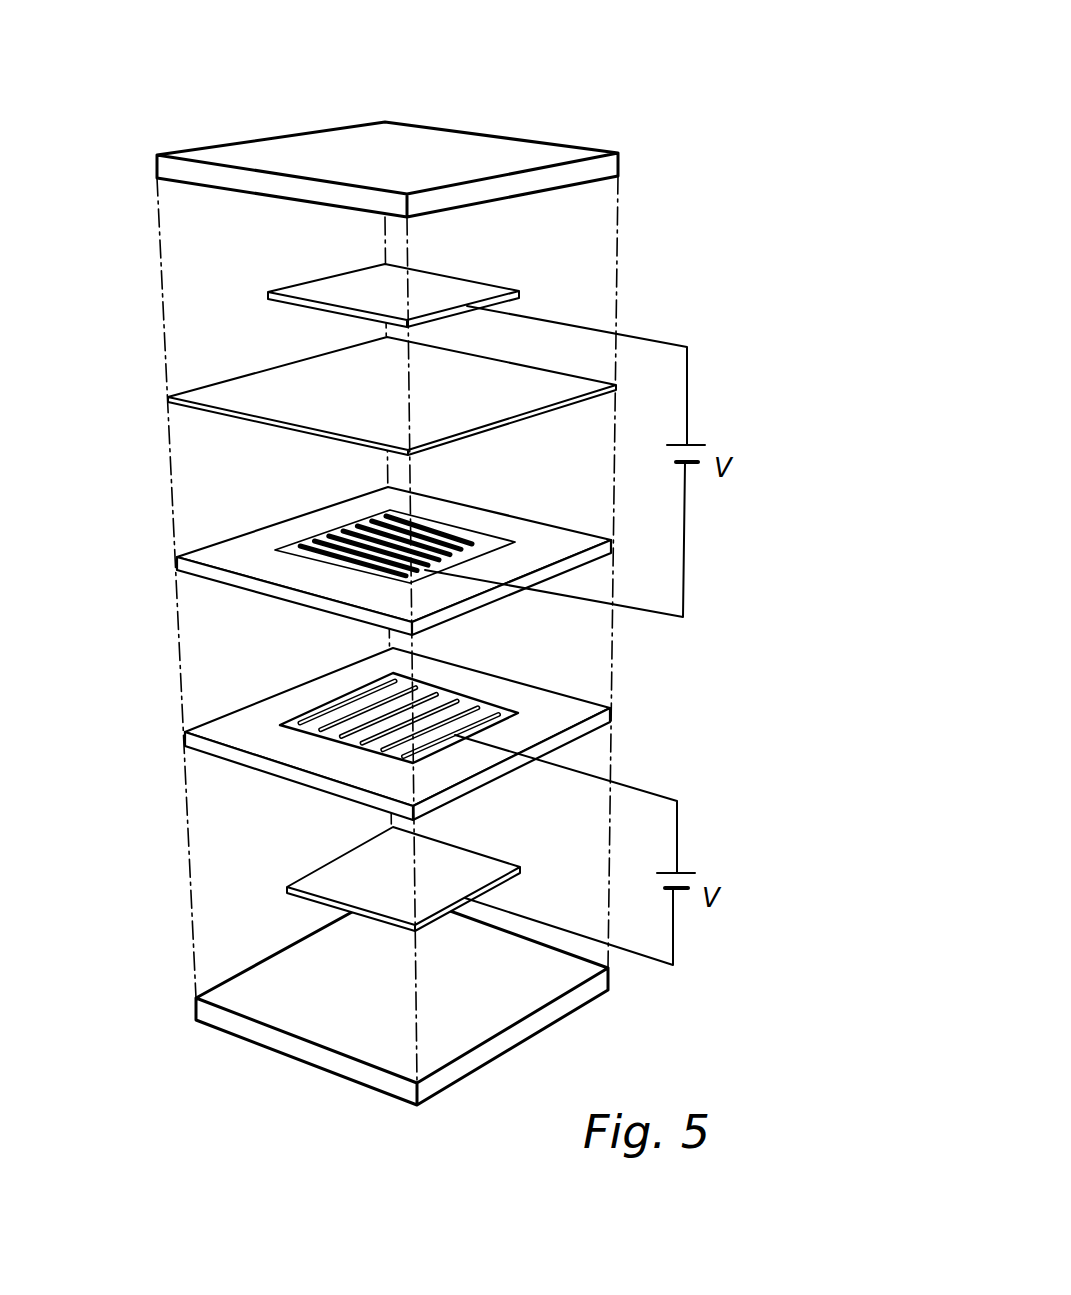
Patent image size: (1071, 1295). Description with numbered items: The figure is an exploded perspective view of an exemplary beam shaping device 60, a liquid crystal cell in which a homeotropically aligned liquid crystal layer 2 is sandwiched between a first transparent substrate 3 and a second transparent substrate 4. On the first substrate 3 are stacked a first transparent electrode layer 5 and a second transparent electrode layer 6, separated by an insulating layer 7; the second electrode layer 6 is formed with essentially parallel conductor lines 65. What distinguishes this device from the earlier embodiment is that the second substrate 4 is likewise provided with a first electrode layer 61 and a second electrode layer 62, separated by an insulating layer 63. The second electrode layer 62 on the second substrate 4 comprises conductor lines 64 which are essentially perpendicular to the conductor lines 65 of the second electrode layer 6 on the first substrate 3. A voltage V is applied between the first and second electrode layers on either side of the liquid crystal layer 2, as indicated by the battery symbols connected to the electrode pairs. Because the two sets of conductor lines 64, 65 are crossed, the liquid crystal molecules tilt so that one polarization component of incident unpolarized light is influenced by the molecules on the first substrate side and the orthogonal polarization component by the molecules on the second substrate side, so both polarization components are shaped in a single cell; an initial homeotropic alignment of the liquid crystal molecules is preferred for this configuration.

The beam shaping device 60 is at (611, 79).
The first transparent substrate 3 is at (619, 162).
The first transparent electrode layer 5 is at (312, 292).
The insulating layer 7 is at (288, 392).
The liquid crystal layer 2 is at (247, 550).
The conductor lines 65 is at (462, 537).
The second transparent electrode layer 6 is at (318, 562).
The conductor lines 64 is at (473, 703).
The second electrode layer 62 is at (520, 715).
The insulating layer 63 is at (218, 752).
The first electrode layer 61 is at (332, 878).
The second transparent substrate 4 is at (269, 990).